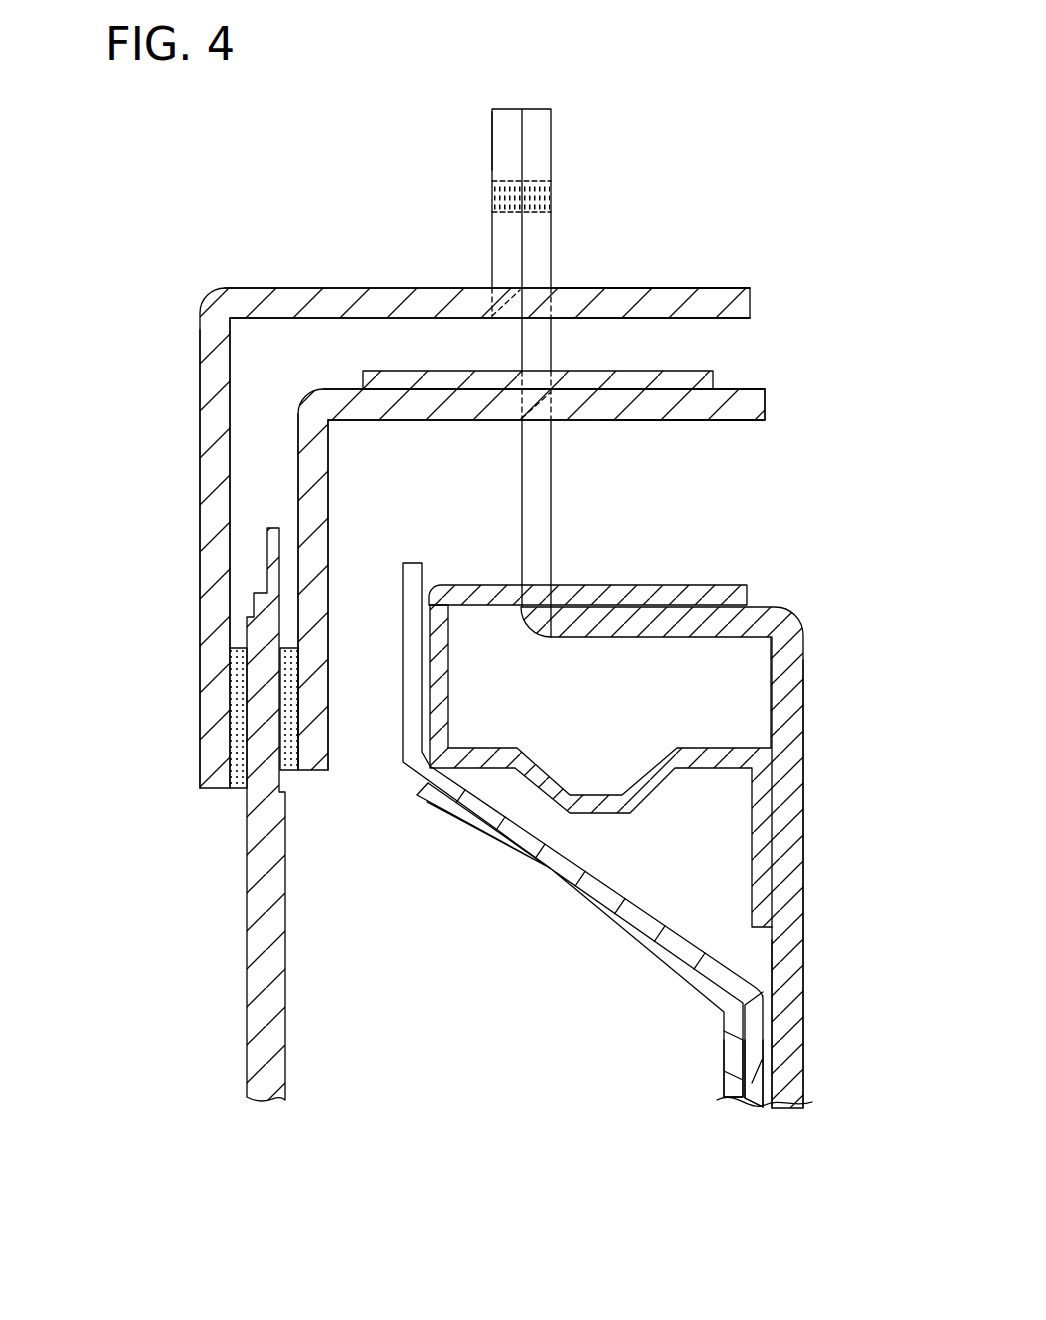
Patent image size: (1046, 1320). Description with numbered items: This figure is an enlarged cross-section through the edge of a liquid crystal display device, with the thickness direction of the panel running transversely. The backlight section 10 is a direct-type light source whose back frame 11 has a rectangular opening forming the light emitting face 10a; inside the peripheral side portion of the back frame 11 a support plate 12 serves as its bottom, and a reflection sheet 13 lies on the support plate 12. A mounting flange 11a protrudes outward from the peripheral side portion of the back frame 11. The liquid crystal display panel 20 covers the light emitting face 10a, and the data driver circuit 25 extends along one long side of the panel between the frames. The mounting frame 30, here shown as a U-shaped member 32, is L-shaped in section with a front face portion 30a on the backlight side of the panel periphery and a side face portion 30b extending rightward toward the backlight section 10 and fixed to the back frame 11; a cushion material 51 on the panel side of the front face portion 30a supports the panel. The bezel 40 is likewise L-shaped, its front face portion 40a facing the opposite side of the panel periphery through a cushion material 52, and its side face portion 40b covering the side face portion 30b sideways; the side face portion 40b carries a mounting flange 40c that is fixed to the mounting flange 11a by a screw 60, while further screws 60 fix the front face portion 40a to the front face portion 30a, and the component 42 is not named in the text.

The backlight section 10 is at (805, 640).
The light emitting face 10a is at (407, 970).
The back frame 11 is at (803, 722).
The mounting flange 11a is at (552, 132).
The support plate 12 is at (752, 983).
The reflection sheet 13 is at (722, 1088).
The liquid crystal display panel 20 is at (247, 1008).
The data driver circuit 25 is at (485, 371).
The mounting frame 30 is at (78, 420).
The front face portion 30a is at (297, 488).
The side face portion 30b is at (403, 380).
The U-shaped member 32 is at (753, 388).
The bezel 40 is at (303, 192).
The front face portion 40a is at (200, 372).
The side face portion 40b is at (283, 287).
The mounting flange 40c is at (490, 138).
The mounting portion 42 is at (633, 288).
The cushion material 51 is at (285, 772).
The cushion material 52 is at (233, 790).
The screw 60 is at (492, 230).